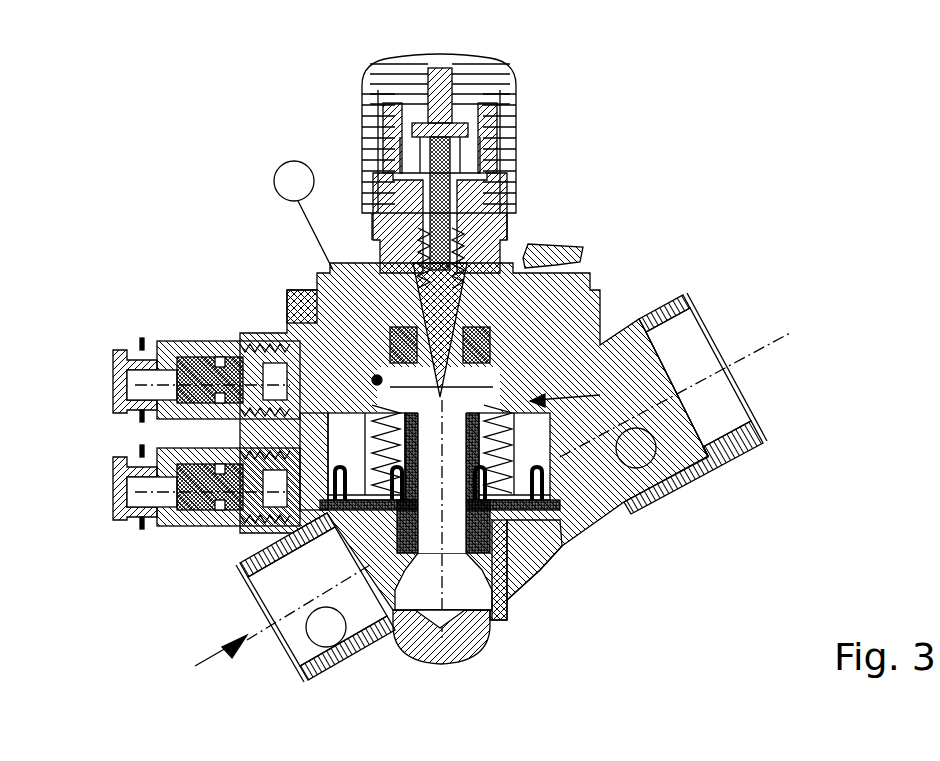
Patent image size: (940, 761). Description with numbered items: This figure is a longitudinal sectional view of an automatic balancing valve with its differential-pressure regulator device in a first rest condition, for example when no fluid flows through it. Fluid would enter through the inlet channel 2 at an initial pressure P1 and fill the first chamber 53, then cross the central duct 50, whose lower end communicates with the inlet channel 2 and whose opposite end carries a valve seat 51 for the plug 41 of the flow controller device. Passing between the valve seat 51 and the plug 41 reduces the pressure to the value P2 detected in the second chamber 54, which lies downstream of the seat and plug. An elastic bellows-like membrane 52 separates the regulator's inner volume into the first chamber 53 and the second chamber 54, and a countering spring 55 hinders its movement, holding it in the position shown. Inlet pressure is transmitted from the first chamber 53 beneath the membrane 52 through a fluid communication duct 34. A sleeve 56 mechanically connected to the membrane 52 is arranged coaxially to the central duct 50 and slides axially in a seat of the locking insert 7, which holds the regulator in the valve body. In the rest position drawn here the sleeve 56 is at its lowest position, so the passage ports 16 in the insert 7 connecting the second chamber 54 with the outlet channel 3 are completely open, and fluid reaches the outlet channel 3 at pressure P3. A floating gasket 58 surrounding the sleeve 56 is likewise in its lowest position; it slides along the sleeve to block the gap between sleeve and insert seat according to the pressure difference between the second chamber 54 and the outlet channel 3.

The inlet channel 2 is at (283, 580).
The outlet channel 3 is at (692, 363).
The locking insert 7 is at (575, 452).
The passage ports 16 is at (722, 330).
The fluid communication duct 34 is at (507, 560).
The plug 41 is at (537, 310).
The central duct 50 is at (480, 595).
The valve seat 51 is at (357, 373).
The elastic bellows-like membrane 52 is at (240, 536).
The first chamber 53 is at (430, 590).
The second chamber 54 is at (553, 347).
The countering spring 55 is at (330, 455).
The sleeve 56 is at (237, 347).
The floating gasket 58 is at (565, 545).
The inlet pressure P1 is at (326, 627).
The second chamber pressure P2 is at (383, 279).
The outlet pressure P3 is at (636, 448).